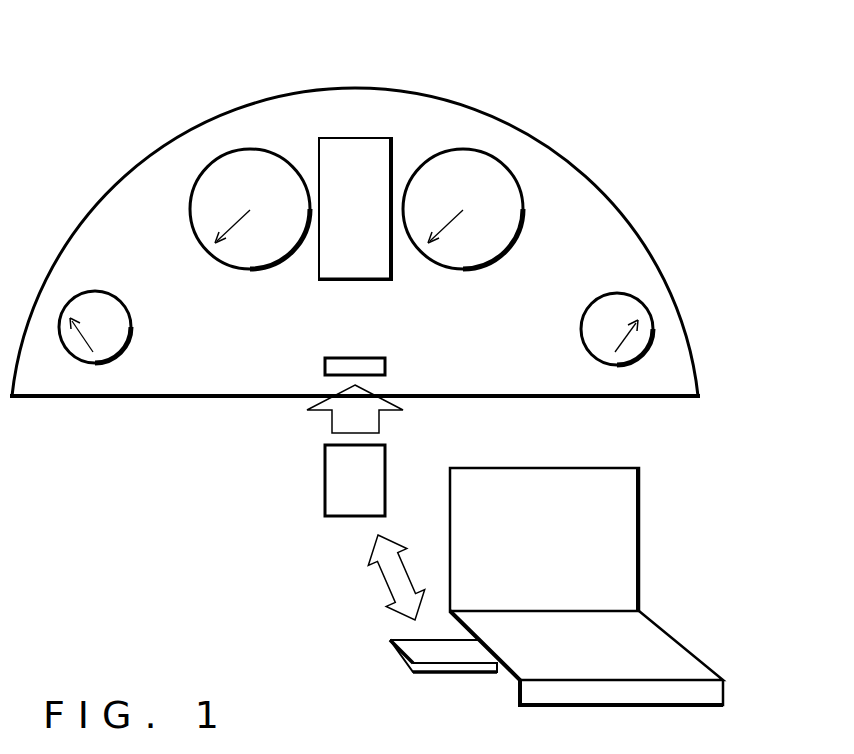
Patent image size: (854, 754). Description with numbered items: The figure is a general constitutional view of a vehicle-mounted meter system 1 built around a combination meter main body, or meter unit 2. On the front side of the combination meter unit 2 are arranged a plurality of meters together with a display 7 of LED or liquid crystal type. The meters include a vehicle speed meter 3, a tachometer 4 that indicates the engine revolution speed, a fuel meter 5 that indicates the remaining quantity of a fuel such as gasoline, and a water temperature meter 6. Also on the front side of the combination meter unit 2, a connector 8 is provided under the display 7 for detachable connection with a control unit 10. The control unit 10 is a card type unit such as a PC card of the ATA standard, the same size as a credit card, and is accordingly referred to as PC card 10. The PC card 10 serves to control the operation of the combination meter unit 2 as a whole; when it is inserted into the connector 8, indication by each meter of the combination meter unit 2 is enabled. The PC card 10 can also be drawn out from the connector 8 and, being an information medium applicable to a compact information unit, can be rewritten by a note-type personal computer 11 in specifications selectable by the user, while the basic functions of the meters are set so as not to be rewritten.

The vehicle-mounted meter system 1 is at (437, 65).
The combination meter main body (meter unit) 2 is at (120, 172).
The vehicle speed meter 3 is at (245, 150).
The tachometer 4 is at (470, 148).
The fuel meter 5 is at (97, 366).
The water temperature meter 6 is at (617, 367).
The display 7 is at (336, 138).
The connector 8 is at (325, 360).
The control unit (PC card) 10 is at (325, 483).
The note-type personal computer 11 is at (668, 632).